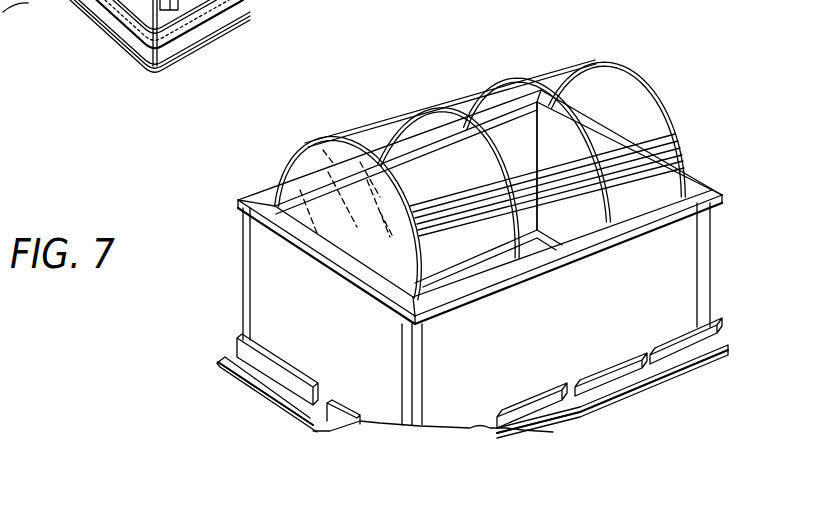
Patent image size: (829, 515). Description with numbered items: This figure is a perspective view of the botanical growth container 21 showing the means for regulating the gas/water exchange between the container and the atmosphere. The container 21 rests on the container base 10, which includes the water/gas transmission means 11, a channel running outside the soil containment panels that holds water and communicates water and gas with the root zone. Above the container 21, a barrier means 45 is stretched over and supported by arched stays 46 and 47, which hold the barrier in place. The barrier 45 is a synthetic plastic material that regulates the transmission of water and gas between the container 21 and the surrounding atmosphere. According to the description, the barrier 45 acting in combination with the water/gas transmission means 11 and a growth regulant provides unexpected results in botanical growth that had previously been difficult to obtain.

The container base 10 is at (268, 401).
The water/gas transmission means 11 is at (620, 377).
The botanical growth container 21 is at (276, 293).
The barrier means 45 is at (637, 74).
The stay 46 is at (430, 108).
The stay 47 is at (520, 85).